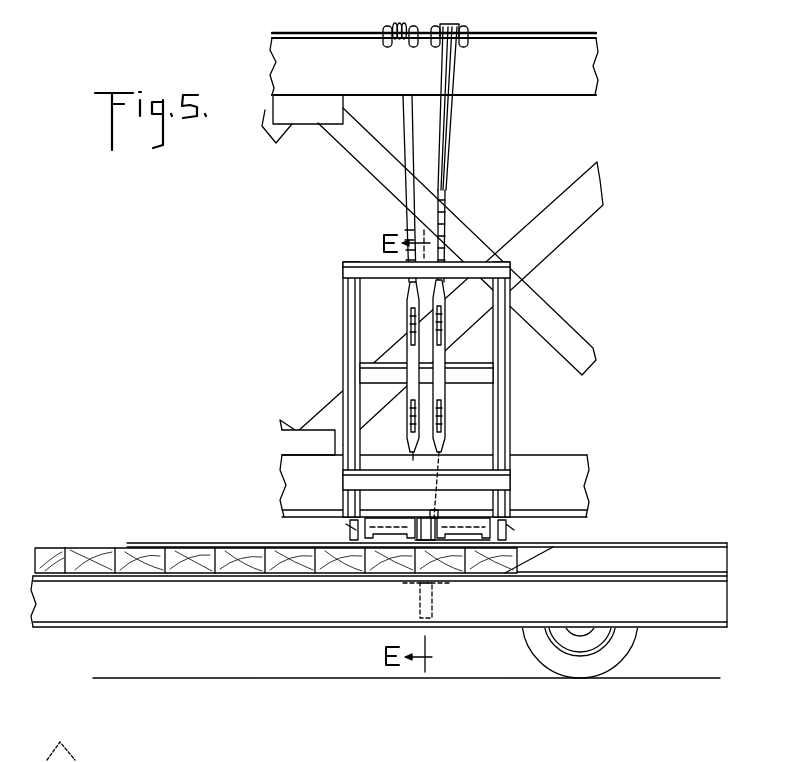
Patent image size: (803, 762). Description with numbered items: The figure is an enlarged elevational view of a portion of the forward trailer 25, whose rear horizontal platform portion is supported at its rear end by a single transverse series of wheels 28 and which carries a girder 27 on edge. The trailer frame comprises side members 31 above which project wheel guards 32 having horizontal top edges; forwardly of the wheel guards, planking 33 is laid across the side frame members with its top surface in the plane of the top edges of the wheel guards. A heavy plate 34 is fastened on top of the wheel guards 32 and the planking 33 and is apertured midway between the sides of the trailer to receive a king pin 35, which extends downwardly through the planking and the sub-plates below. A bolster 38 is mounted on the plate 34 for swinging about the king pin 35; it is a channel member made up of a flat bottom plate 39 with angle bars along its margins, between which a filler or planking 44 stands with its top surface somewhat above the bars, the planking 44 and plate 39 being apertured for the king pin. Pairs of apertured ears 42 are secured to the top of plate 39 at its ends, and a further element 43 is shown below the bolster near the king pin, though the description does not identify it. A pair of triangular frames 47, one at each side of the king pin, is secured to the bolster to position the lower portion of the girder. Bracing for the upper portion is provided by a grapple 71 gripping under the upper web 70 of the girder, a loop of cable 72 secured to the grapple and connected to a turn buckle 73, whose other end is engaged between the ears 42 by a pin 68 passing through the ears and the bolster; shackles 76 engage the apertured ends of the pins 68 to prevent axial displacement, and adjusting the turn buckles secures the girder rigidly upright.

The forward trailer 25 is at (236, 627).
The girder 27 is at (597, 84).
The wheels 28 is at (590, 666).
The side members 31 is at (704, 605).
The wheel guards 32 is at (660, 553).
The planking 33 is at (232, 553).
The plate 34 is at (598, 543).
The king pin 35 is at (433, 600).
The bolster 38 is at (443, 510).
The bottom plate 39 is at (458, 536).
The ears 42 is at (410, 518).
The center block 43 is at (418, 542).
The filler or planking 44 is at (480, 521).
The triangular racks or frames 47 is at (343, 340).
The pin 68 is at (511, 529).
The upper web 70 is at (538, 33).
The grapple 71 is at (388, 28).
The cable 72 is at (453, 142).
The turn buckle 73 is at (407, 308).
The shackles 76 is at (347, 530).